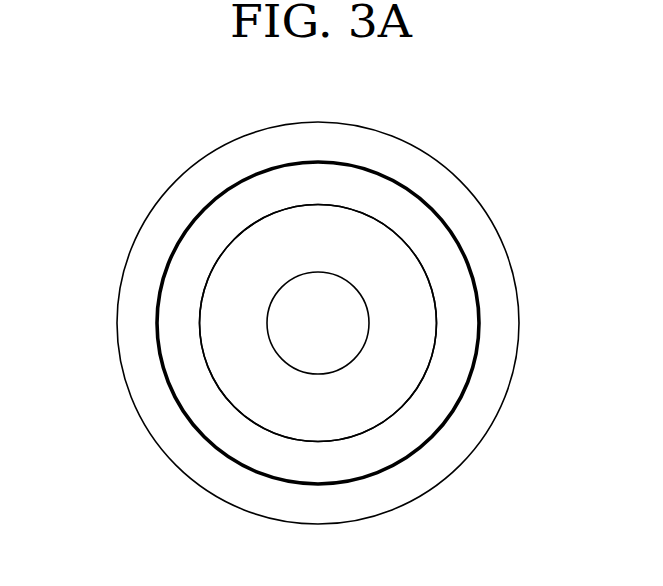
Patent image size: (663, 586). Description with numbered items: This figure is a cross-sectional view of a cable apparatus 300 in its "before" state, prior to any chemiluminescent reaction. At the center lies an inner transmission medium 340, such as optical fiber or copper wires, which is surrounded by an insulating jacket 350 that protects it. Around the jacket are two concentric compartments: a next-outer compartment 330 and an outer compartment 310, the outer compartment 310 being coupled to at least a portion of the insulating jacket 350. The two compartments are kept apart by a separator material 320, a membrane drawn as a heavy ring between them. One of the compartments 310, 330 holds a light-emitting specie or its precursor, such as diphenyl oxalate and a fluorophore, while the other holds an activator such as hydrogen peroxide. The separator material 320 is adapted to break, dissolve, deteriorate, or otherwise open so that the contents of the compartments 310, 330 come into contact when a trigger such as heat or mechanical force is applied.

The cable apparatus 300 is at (105, 87).
The outer compartment 310 is at (135, 360).
The separator material 320 is at (183, 415).
The next-outer compartment 330 is at (248, 445).
The inner transmission medium 340 is at (337, 298).
The insulating jacket 350 is at (404, 295).